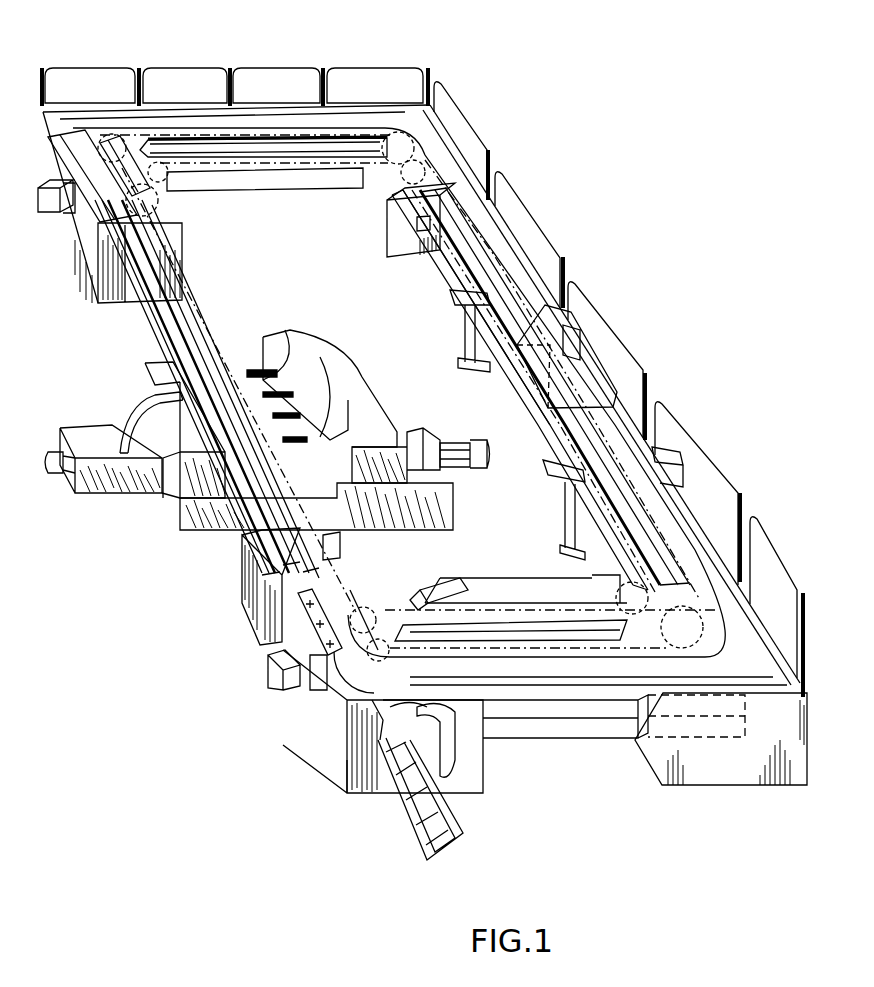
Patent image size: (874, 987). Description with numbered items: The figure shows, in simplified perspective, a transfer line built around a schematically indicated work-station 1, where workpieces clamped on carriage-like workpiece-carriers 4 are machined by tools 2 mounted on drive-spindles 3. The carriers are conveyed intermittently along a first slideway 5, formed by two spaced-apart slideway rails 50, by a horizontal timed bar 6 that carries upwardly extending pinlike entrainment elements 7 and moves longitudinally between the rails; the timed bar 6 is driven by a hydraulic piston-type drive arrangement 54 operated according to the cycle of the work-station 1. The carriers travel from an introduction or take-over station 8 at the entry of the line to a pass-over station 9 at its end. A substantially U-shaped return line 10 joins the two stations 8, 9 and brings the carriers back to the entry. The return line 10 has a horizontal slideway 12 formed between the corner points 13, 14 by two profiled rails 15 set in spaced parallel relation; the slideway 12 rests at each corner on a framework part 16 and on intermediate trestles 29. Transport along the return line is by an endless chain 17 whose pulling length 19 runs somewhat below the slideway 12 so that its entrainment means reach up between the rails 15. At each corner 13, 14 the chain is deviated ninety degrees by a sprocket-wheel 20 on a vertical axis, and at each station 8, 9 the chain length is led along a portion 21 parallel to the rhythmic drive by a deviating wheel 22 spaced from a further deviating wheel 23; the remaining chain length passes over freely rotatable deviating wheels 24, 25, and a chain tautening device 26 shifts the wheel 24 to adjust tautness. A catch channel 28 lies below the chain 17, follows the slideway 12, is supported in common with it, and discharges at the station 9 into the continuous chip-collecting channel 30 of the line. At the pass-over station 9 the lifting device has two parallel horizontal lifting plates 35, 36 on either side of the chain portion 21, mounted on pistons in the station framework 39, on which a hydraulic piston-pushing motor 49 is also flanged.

The work-station 1 is at (177, 500).
The tools 2 is at (247, 368).
The drive-spindles 3 is at (272, 368).
The workpiece-carrier 4 is at (590, 375).
The first slideway 5 is at (195, 300).
The timed bar 6 is at (255, 545).
The entrainment elements 7 is at (300, 620).
The introduction or take-over station 8 is at (80, 232).
The pass-over station 9 is at (345, 790).
The return line 10 is at (515, 378).
The slideway 12 is at (298, 112).
The corner point 13 is at (408, 128).
The corner point 14 is at (780, 690).
The profiled rails 15 is at (338, 118).
The framework part 16 is at (395, 220).
The endless chain 17 is at (560, 423).
The pulling length of the chain 19 is at (685, 580).
The sprocket-wheel 20 is at (422, 160).
The parallel chain portion 21 is at (100, 185).
The deviating wheel 22 is at (112, 134).
The deviating wheel 23 is at (155, 200).
The deviating wheel 24 is at (166, 168).
The deviating wheel 25 is at (390, 160).
The chain tautening device 26 is at (460, 588).
The catch channel 28 is at (518, 720).
The intermediate trestles 29 is at (450, 330).
The chip-collecting channel 30 is at (422, 805).
The lifting plate 35 is at (80, 178).
The lifting plate 36 is at (128, 158).
The framework 39 is at (350, 775).
The hydraulic piston-pushing motor 49 is at (268, 668).
The slideway rails 50 is at (340, 552).
The drive arrangement 54 is at (378, 745).